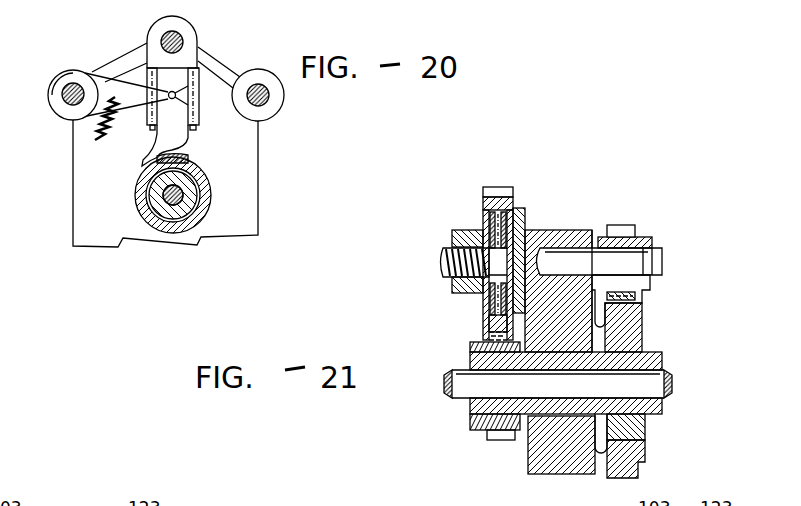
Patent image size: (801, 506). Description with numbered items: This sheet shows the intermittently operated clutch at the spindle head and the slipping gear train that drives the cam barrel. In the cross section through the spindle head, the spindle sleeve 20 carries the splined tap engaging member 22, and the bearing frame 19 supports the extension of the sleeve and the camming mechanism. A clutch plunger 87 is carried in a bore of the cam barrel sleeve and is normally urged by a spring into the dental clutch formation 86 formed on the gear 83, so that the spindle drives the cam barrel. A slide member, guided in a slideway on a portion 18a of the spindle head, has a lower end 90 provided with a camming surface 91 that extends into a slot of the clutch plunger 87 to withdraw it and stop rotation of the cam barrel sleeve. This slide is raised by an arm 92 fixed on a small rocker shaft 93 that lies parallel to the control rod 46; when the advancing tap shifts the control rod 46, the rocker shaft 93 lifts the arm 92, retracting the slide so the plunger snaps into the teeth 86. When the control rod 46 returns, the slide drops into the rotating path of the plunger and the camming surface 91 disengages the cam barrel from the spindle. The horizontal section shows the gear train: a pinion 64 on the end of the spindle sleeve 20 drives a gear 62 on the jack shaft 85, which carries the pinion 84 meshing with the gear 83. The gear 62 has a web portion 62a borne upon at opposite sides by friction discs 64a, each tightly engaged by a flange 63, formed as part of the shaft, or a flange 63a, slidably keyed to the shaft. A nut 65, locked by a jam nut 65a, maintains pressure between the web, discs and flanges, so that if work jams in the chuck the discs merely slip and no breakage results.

In FIG. 20, the portion of the spindle head 18a is at (139, 63).
In FIG. 20, the arm 92 is at (102, 87).
In FIG. 20, the rocker shaft 93 is at (62, 92).
In FIG. 20, the control rod 46 is at (183, 40).
In FIG. 20, the bearing frame 19 is at (258, 135).
In FIG. 21, the bearing frame 19 is at (563, 462).
In FIG. 20, the lower end of the clutch camming member 90 is at (178, 130).
In FIG. 20, the camming surface 91 is at (180, 148).
In FIG. 20, the clutch plunger 87 is at (189, 163).
In FIG. 20, the tap engaging member 22 is at (183, 195).
In FIG. 21, the tap engaging member 22 is at (462, 392).
In FIG. 20, the spindle sleeve 20 is at (200, 212).
In FIG. 21, the spindle sleeve 20 is at (474, 356).
In FIG. 21, the gear 62 is at (497, 189).
In FIG. 21, the friction discs 64a is at (490, 217).
In FIG. 21, the web portion 62a is at (488, 218).
In FIG. 21, the flange 63a is at (516, 219).
In FIG. 21, the jack shaft 85 is at (573, 260).
In FIG. 21, the pinion 84 is at (631, 241).
In FIG. 21, the jam nut 65a is at (452, 241).
In FIG. 21, the nut 65 is at (450, 287).
In FIG. 21, the flange 63 is at (488, 307).
In FIG. 21, the pinion 64 is at (496, 440).
In FIG. 21, the dental clutch formation 86 is at (641, 430).
In FIG. 21, the gear 83 is at (628, 446).